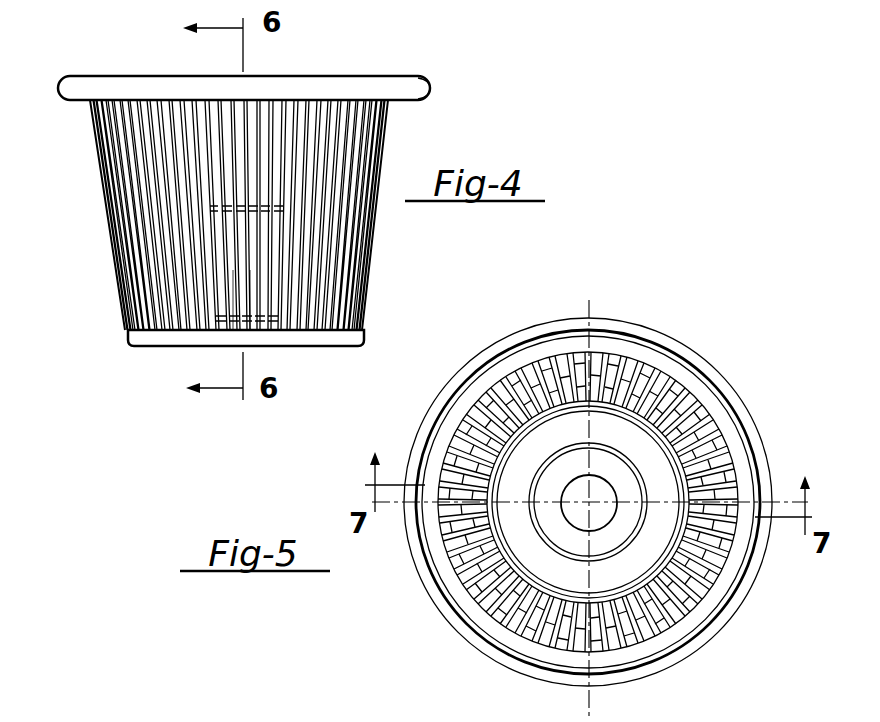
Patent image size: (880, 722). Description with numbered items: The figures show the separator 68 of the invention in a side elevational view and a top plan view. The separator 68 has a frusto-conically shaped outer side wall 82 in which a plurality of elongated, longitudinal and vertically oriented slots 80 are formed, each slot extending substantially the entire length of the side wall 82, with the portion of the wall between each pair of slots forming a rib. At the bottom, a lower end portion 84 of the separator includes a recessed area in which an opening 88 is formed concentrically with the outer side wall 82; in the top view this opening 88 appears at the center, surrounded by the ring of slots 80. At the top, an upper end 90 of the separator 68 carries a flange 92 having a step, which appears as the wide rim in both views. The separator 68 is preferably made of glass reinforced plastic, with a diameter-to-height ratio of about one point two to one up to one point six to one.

In FIG. 4, the separator 68 is at (46, 72).
In FIG. 5, the separator 68 is at (735, 343).
In FIG. 4, the slots 80 is at (250, 278).
In FIG. 5, the slots 80 is at (613, 368).
In FIG. 4, the outer side wall 82 is at (244, 112).
In FIG. 5, the outer side wall 82 is at (582, 403).
In FIG. 4, the lower end portion 84 is at (130, 338).
In FIG. 5, the opening 88 is at (590, 487).
In FIG. 4, the upper end 90 is at (87, 74).
In FIG. 5, the upper end 90 is at (535, 347).
In FIG. 4, the flange 92 is at (426, 86).